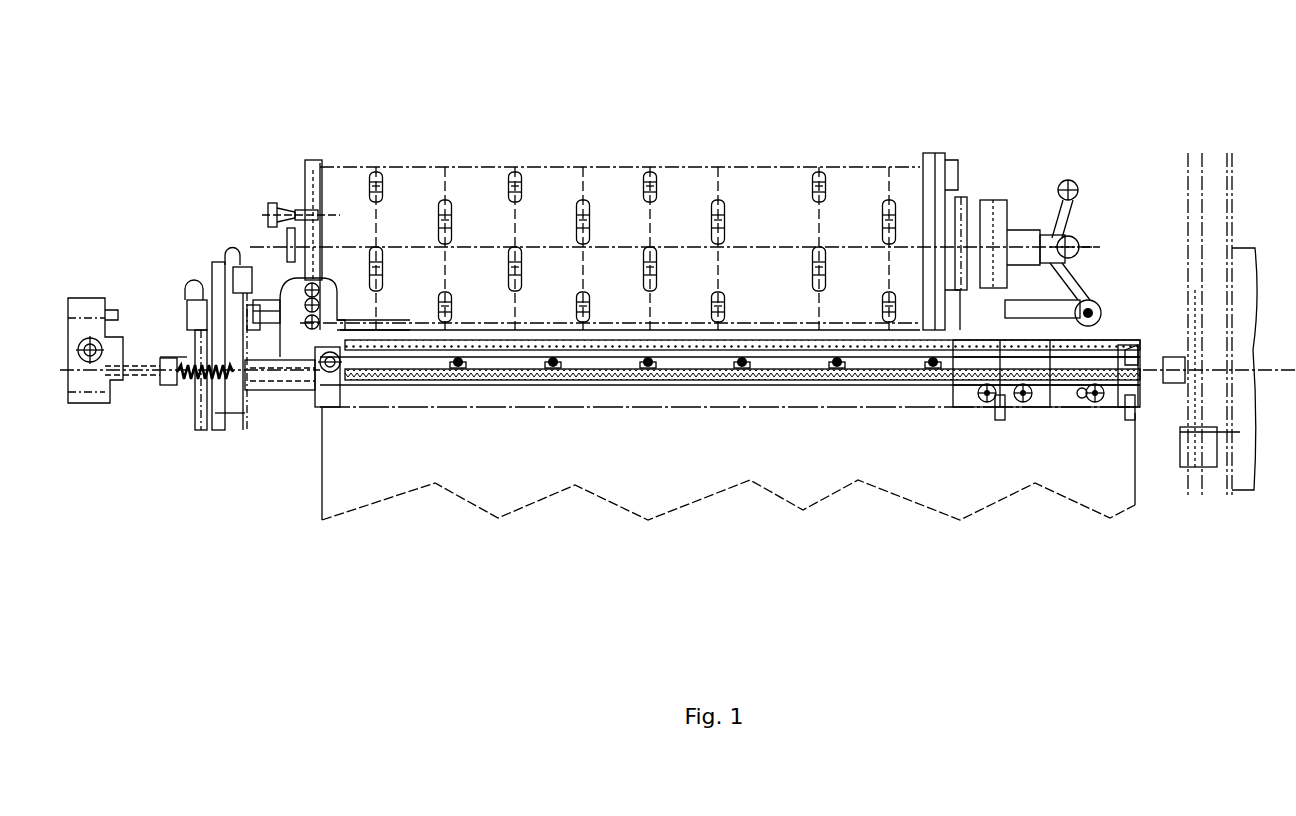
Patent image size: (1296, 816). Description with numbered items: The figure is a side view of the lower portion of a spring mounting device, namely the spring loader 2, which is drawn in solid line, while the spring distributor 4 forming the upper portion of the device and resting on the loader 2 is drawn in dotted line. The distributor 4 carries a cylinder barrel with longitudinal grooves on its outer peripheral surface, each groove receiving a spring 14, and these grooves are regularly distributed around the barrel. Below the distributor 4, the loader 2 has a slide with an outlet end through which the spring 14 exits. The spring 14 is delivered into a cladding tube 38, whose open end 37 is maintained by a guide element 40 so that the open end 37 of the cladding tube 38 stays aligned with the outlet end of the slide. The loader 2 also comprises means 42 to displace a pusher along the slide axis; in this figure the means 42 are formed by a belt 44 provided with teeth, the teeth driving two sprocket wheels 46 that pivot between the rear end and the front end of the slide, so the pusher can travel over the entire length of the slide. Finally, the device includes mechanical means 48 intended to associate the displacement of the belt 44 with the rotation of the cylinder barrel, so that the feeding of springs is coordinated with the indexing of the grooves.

The spring loader 2 is at (330, 457).
The spring distributor 4 is at (673, 157).
The spring 14 is at (204, 412).
The open end 37 is at (178, 388).
The cladding tube 38 is at (137, 378).
The guide element 40 is at (268, 388).
The means to displace the pusher 42 is at (730, 395).
The belt 44 is at (435, 378).
The sprocket wheels 46 is at (348, 385).
The mechanical means 48 is at (1116, 245).